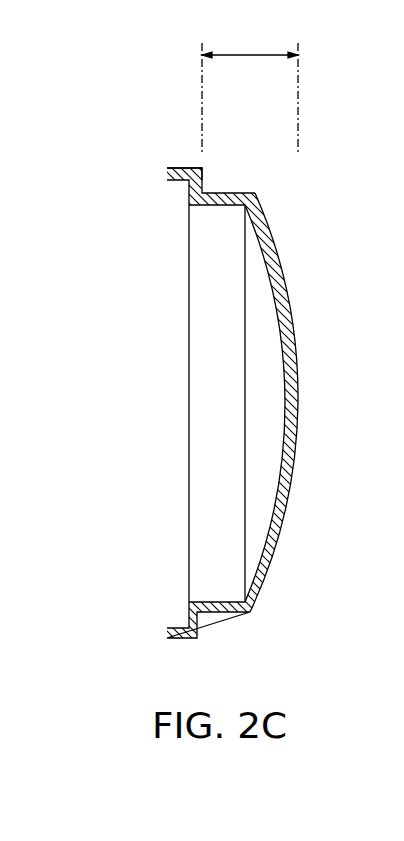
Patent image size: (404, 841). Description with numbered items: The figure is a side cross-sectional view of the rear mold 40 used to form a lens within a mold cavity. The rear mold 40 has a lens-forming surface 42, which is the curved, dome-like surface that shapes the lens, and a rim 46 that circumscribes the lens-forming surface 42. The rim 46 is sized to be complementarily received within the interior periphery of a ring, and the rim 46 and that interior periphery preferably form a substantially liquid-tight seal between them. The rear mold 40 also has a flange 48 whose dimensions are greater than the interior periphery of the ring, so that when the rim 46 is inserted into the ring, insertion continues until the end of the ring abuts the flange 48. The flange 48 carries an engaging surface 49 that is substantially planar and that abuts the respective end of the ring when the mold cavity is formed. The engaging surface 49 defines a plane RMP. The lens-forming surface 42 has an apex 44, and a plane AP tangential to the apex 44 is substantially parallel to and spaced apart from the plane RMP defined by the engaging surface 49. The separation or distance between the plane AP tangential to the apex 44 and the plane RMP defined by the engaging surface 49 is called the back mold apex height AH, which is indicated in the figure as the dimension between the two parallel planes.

The rear mold 40 is at (167, 403).
The lens-forming surface 42 is at (273, 550).
The apex 44 is at (297, 407).
The rim 46 is at (220, 195).
The flange 48 is at (182, 640).
The engaging surface 49 is at (205, 177).
The plane defined by the engaging surface RMP is at (202, 90).
The plane tangential to the apex AP is at (298, 85).
The back mold apex height AH is at (250, 44).